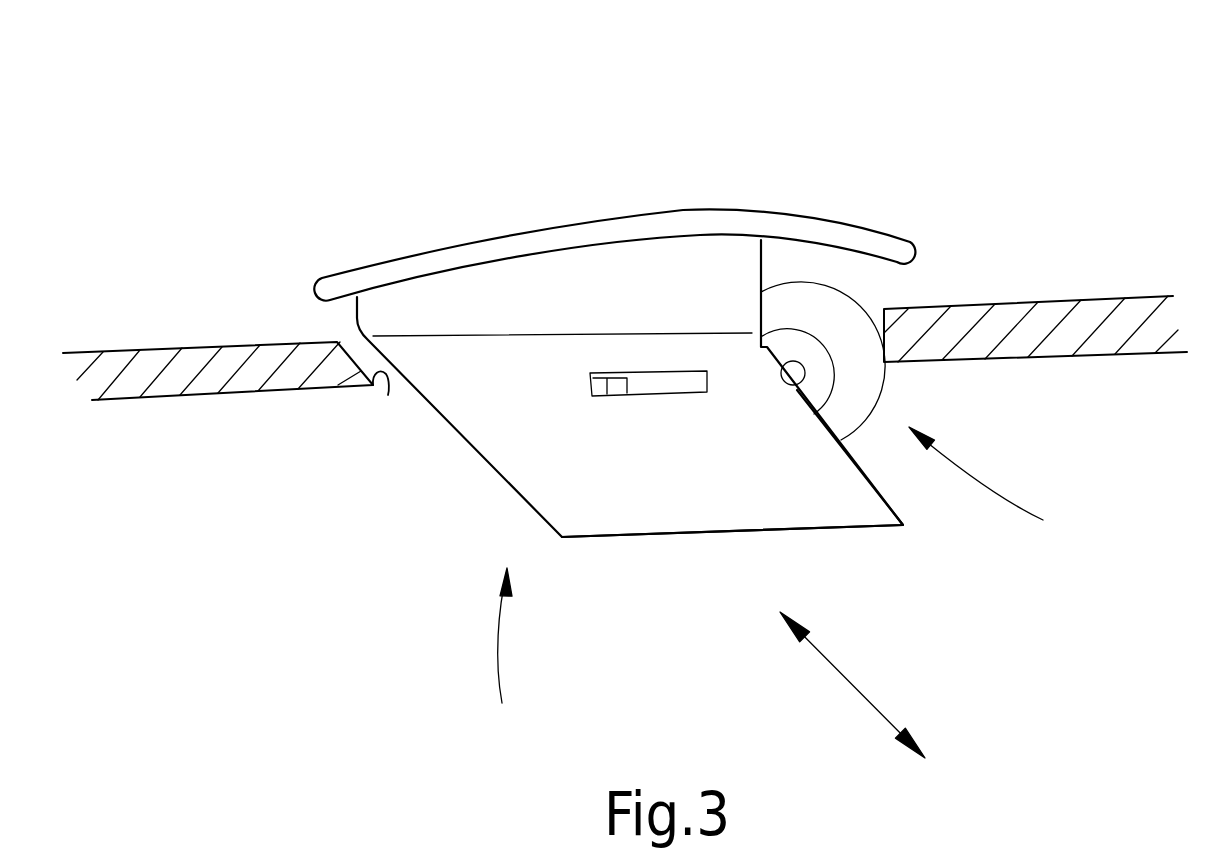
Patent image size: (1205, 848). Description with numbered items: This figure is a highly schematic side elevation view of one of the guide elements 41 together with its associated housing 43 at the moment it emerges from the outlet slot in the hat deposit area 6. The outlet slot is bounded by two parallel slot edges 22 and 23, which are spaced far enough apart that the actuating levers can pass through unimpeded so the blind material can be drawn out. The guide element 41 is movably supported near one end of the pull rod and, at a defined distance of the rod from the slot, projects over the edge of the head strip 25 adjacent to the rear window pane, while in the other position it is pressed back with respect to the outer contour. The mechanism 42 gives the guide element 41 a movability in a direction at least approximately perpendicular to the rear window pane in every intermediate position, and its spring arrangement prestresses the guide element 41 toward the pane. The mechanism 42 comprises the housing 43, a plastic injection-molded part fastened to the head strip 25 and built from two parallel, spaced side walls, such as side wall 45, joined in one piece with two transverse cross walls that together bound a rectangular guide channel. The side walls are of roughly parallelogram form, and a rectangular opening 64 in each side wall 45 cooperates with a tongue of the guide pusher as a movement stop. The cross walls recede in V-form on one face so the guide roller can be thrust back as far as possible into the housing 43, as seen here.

The hat deposit area 6 is at (170, 352).
The slot edge 22 is at (884, 318).
The slot edge 23 is at (389, 392).
The head strip 25 is at (462, 240).
The guide element 41 is at (994, 481).
The mechanism 42 is at (513, 656).
The housing 43 is at (468, 460).
The side wall 45 is at (827, 497).
The rectangular opening 64 is at (668, 372).